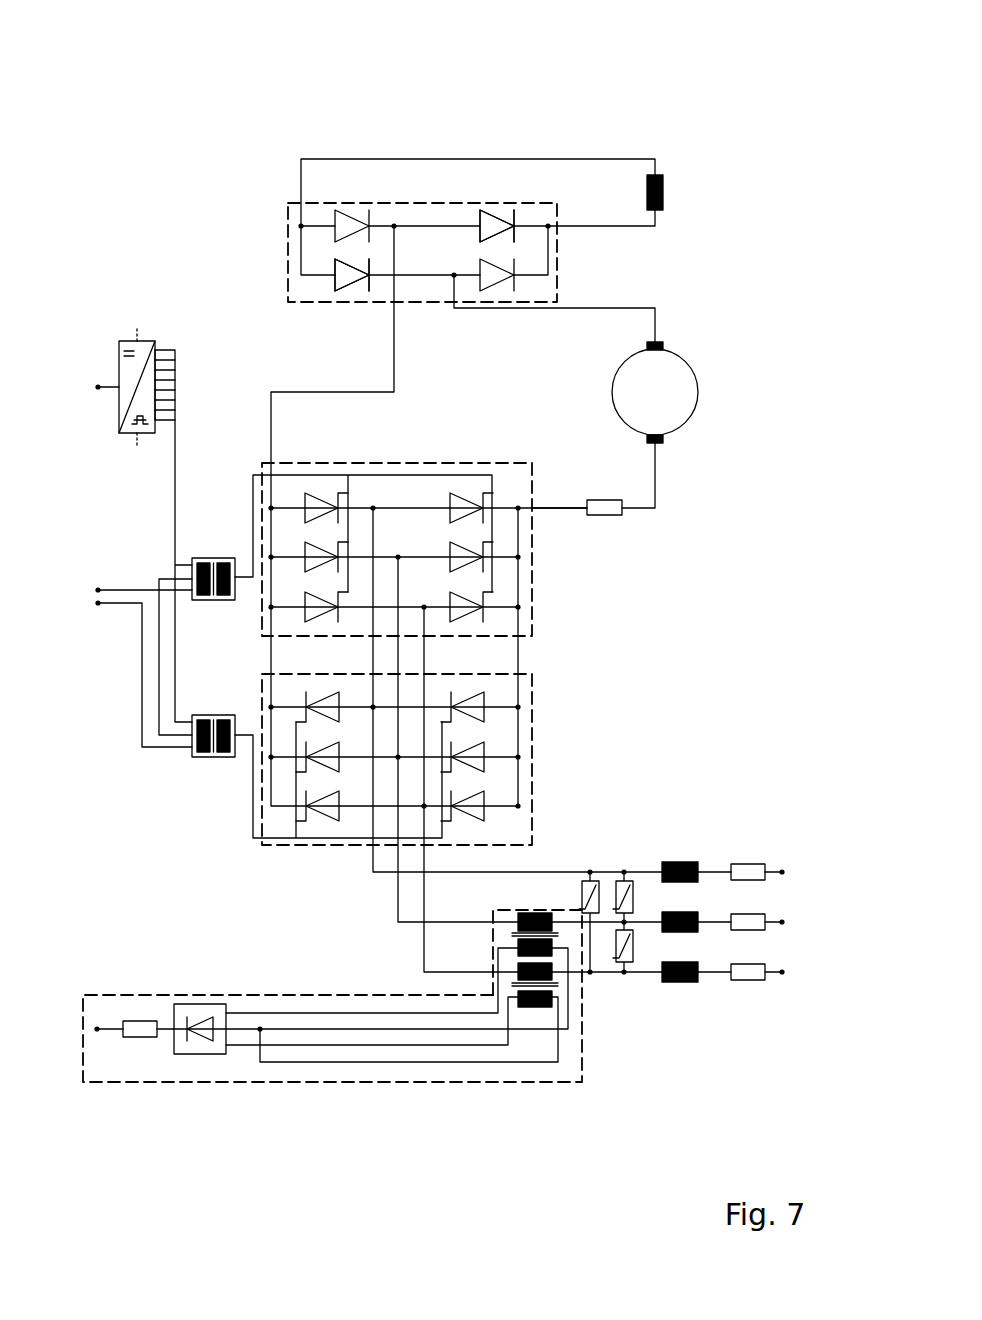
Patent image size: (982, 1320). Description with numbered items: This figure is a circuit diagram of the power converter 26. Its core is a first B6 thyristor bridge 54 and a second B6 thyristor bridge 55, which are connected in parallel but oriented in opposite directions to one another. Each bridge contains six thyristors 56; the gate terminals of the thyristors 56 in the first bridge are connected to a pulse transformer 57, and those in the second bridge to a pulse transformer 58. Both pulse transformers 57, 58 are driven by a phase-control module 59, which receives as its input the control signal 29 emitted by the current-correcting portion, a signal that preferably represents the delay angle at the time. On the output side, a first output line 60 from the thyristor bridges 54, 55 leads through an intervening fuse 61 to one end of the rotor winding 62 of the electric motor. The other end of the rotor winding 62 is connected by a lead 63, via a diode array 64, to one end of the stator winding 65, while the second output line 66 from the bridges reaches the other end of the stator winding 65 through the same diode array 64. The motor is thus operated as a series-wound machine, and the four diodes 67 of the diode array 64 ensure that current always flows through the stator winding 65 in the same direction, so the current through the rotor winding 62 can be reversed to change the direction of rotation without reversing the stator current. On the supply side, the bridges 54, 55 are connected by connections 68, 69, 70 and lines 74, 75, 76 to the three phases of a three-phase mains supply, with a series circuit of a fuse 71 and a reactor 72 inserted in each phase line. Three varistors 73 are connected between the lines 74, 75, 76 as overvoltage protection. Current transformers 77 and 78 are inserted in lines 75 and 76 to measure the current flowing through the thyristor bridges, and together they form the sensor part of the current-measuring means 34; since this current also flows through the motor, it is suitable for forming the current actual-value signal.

The power converter 26 is at (288, 88).
The control signal 29 is at (100, 385).
The current-measuring means 34 is at (240, 1083).
The first B6 thyristor bridge 54 is at (535, 585).
The second B6 thyristor bridge 55 is at (535, 757).
The thyristor 56 is at (318, 503).
The pulse transformer 57 is at (212, 557).
The pulse transformer 58 is at (212, 714).
The phase-control module 59 is at (131, 446).
The first output line 60 is at (560, 504).
The fuse 61 is at (608, 516).
The rotor winding 62 is at (698, 392).
The lead 63 is at (628, 307).
The diode array 64 is at (290, 228).
The stator winding 65 is at (664, 191).
The second output line 66 is at (394, 355).
The diode 67 is at (489, 212).
The connection 68 is at (803, 873).
The connection 69 is at (803, 923).
The connection 70 is at (803, 973).
The fuse 71 is at (748, 863).
The reactor 72 is at (680, 861).
The varistor 73 is at (624, 963).
The line 74 is at (373, 878).
The line 75 is at (398, 928).
The line 76 is at (424, 970).
The current transformer 77 is at (541, 913).
The current transformer 78 is at (545, 1007).